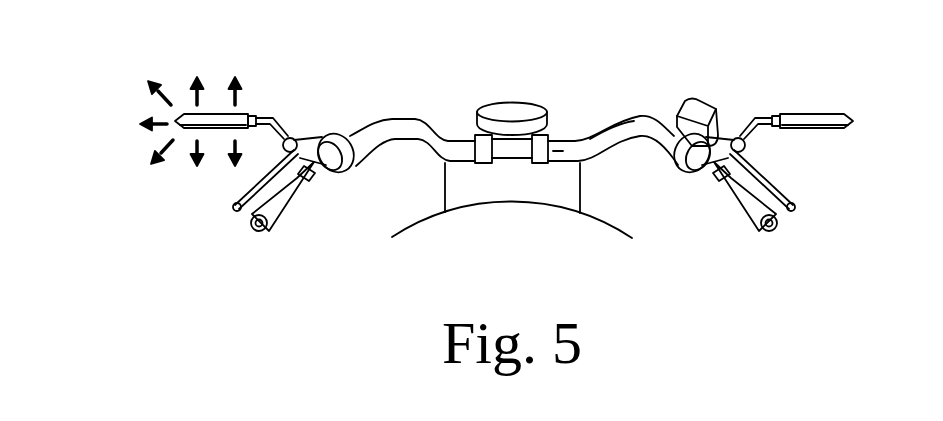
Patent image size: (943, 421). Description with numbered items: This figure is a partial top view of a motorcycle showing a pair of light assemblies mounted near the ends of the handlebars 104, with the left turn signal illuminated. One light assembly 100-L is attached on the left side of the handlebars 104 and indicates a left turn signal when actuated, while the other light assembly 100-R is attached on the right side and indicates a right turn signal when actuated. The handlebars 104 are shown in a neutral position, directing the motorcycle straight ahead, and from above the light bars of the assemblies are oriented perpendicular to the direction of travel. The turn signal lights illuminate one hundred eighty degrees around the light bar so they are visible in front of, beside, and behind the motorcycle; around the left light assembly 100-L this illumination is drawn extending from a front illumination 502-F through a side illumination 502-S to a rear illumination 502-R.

The handlebars 104 is at (372, 122).
The light assembly 100-L is at (288, 74).
The light assembly 100-R is at (730, 76).
The front illumination 502-F is at (233, 95).
The rear illumination 502-R is at (217, 153).
The side illumination 502-S is at (157, 131).